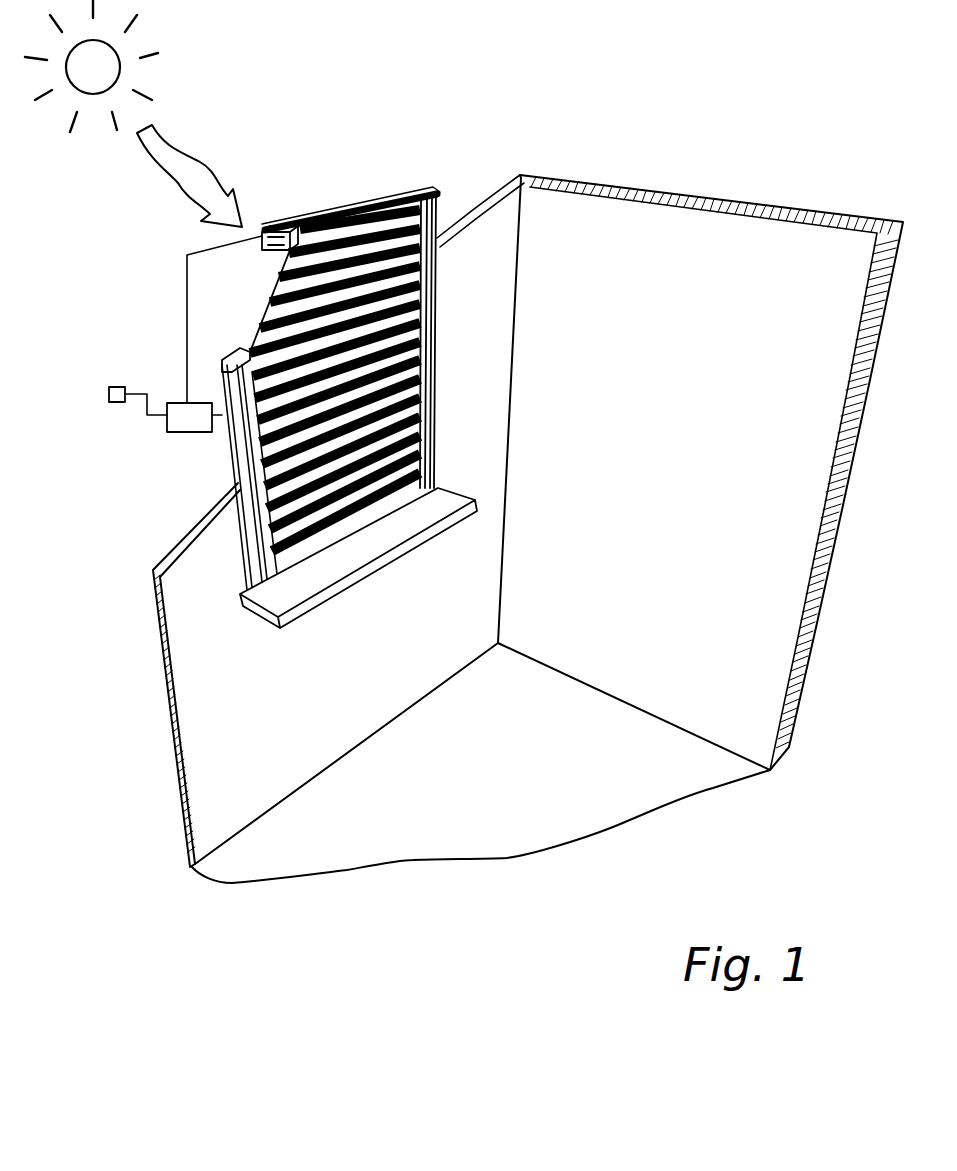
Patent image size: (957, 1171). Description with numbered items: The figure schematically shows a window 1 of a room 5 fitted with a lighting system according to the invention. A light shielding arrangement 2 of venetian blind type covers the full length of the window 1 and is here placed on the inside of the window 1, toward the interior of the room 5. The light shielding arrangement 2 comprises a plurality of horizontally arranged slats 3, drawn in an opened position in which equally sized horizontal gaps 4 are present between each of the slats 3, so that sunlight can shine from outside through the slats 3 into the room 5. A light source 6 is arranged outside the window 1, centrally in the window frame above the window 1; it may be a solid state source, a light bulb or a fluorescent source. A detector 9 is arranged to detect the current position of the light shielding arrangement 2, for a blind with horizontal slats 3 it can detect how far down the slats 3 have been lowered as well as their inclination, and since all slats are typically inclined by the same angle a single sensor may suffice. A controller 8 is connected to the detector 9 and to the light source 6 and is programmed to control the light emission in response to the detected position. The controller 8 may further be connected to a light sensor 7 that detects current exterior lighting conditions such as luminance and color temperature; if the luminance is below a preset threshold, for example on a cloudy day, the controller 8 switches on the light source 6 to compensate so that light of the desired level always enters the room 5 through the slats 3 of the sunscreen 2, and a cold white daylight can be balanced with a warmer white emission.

The window 1 is at (281, 391).
The light shielding arrangement 2 is at (378, 380).
The slats 3 is at (405, 322).
The horizontal gaps 4 is at (433, 430).
The room 5 is at (688, 242).
The light source 6 is at (276, 224).
The light sensor 7 is at (108, 395).
The controller 8 is at (165, 425).
The detector 9 is at (223, 354).